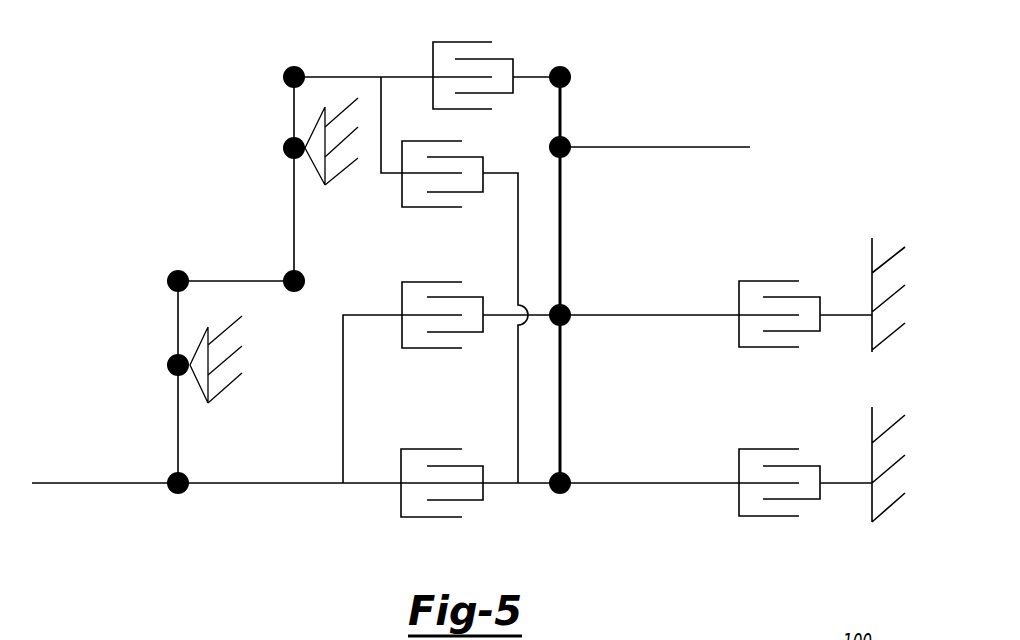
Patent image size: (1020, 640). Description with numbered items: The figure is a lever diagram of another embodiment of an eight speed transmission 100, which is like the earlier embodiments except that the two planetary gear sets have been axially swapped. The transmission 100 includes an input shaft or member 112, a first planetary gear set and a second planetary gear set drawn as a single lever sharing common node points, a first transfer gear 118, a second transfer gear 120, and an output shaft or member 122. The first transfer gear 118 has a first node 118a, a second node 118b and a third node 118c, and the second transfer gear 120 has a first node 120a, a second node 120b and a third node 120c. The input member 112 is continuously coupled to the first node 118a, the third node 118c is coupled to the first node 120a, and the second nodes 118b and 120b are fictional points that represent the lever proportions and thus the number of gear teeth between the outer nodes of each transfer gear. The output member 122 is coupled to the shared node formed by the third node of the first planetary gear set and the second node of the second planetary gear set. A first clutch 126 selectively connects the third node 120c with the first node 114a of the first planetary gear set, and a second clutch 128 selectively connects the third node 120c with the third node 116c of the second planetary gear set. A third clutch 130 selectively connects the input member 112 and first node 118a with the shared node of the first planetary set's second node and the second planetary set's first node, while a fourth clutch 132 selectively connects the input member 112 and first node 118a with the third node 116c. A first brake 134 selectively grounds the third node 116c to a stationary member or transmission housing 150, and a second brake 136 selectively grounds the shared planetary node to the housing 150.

The eight speed transmission 100 is at (717, 41).
The input shaft or member 112 is at (82, 486).
The first node of the first planetary gear set 114a is at (564, 66).
The third node of the second planetary gear set 116c is at (568, 492).
The first transfer gear 118 is at (191, 502).
The first node of the first transfer gear 118a is at (169, 478).
The second node of the first transfer gear 118b is at (168, 366).
The third node of the first transfer gear 118c is at (168, 280).
The second transfer gear 120 is at (297, 304).
The first node of the second transfer gear 120a is at (285, 276).
The second node of the second transfer gear 120b is at (283, 148).
The third node of the second transfer gear 120c is at (283, 75).
The output shaft or member 122 is at (677, 147).
The first clutch 126 is at (456, 42).
The second clutch 128 is at (430, 207).
The third clutch 130 is at (430, 348).
The fourth clutch 132 is at (430, 517).
The first brake 134 is at (771, 449).
The second brake 136 is at (771, 281).
The stationary member or transmission housing 150 is at (872, 256).